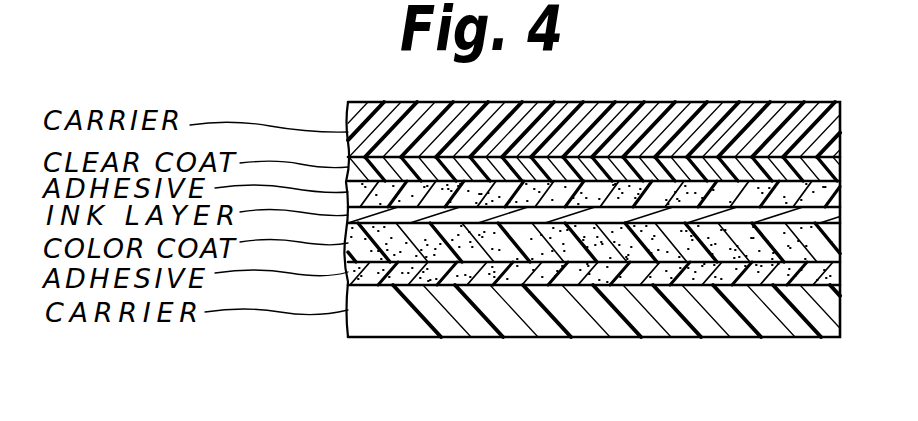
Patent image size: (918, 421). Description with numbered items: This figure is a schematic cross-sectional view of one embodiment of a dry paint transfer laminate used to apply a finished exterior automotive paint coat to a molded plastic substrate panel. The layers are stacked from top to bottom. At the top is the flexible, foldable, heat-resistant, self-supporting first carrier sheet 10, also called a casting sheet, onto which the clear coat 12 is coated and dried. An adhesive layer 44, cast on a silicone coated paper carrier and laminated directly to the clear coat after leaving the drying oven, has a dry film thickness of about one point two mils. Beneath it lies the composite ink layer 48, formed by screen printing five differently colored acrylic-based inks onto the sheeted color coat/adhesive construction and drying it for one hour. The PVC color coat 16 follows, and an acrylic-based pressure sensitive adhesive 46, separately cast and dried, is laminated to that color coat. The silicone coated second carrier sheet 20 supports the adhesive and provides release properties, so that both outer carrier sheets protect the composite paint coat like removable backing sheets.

The first carrier sheet 10 is at (826, 134).
The clear coat 12 is at (830, 166).
The adhesive layer 44 is at (830, 197).
The composite ink layer 48 is at (828, 222).
The color coat 16 is at (832, 250).
The pressure sensitive adhesive 46 is at (832, 278).
The second carrier sheet 20 is at (826, 316).